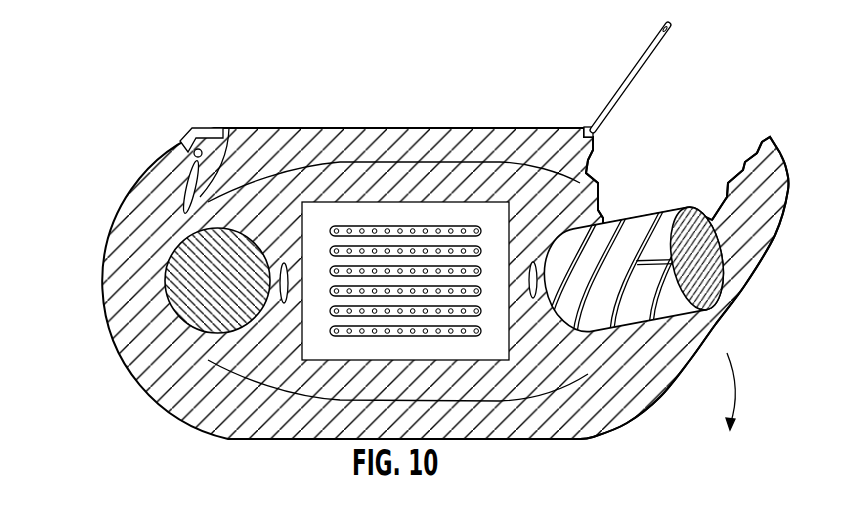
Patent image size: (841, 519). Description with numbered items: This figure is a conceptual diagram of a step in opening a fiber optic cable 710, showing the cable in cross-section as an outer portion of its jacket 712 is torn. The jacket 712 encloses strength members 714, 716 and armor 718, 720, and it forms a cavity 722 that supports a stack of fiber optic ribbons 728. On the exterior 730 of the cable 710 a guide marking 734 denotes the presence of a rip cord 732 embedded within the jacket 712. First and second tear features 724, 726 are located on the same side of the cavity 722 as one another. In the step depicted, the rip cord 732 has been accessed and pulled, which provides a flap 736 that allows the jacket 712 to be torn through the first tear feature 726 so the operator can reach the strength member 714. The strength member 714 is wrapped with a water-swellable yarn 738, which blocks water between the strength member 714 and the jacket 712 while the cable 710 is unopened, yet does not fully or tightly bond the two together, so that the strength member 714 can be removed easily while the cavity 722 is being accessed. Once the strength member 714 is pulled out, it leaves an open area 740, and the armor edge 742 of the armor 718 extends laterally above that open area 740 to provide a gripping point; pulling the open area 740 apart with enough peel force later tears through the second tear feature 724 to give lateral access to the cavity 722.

The fiber optic cable 710 is at (80, 147).
The jacket 712 is at (237, 393).
The strength member 714 is at (697, 210).
The strength member 716 is at (193, 278).
The armor 718 is at (520, 168).
The armor 720 is at (587, 378).
The cavity 722 is at (350, 350).
The second tear feature 724 is at (282, 265).
The first tear feature 726 is at (229, 128).
The fiber optic ribbons 728 is at (357, 226).
The exterior 730 is at (130, 393).
The rip cord 732 is at (193, 156).
The guide marking 734 is at (190, 128).
The flap 736 is at (688, 346).
The water-swellable yarn 738 is at (704, 308).
The open area 740 is at (600, 320).
The armor edge 742 is at (600, 184).